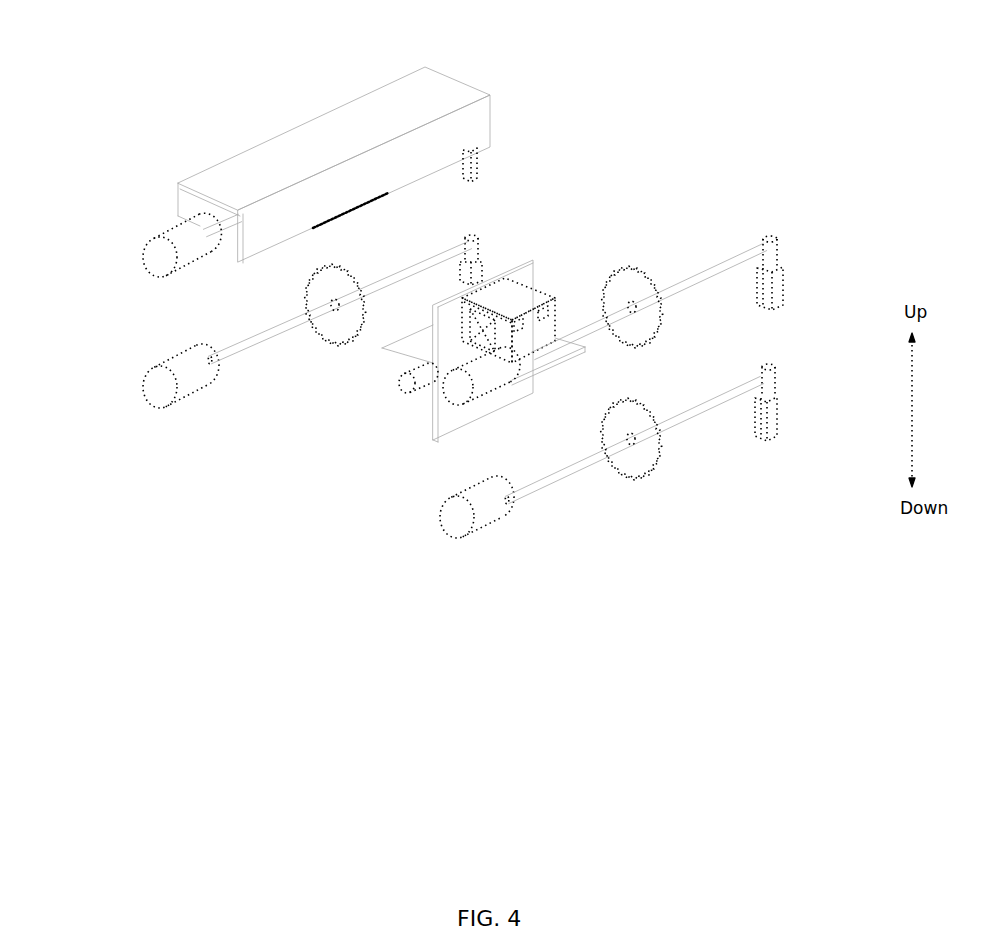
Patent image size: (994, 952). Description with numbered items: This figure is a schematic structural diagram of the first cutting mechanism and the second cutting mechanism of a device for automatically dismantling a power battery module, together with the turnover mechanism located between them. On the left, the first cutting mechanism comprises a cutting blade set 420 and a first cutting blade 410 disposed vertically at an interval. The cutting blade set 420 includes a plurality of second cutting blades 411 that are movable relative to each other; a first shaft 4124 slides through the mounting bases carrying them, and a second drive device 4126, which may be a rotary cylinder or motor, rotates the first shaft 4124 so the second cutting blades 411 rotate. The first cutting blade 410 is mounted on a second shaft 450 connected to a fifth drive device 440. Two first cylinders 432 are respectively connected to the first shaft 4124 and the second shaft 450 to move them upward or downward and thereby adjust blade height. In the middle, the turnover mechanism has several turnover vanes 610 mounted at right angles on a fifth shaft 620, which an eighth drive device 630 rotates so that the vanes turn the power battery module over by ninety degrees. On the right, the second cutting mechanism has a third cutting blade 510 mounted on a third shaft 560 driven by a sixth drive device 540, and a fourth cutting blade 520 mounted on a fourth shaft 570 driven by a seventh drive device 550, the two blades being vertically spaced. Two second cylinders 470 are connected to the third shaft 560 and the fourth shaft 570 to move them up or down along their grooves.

The second cutting blade 411 is at (290, 188).
The cutting blade set 420 is at (313, 148).
The first shaft 4124 is at (227, 227).
The second drive device 4126 is at (157, 257).
The first cylinder 432 is at (477, 260).
The first cutting blade 410 is at (330, 330).
The fifth drive device 440 is at (160, 385).
The second shaft 450 is at (243, 357).
The turnover vane 610 is at (413, 345).
The eighth drive device 630 is at (407, 390).
The fifth shaft 620 is at (543, 262).
The seventh drive device 550 is at (460, 397).
The fourth shaft 570 is at (723, 253).
The fourth cutting blade 520 is at (622, 262).
The second cylinder 470 is at (772, 383).
The third shaft 560 is at (575, 470).
The third cutting blade 510 is at (632, 457).
The sixth drive device 540 is at (457, 521).